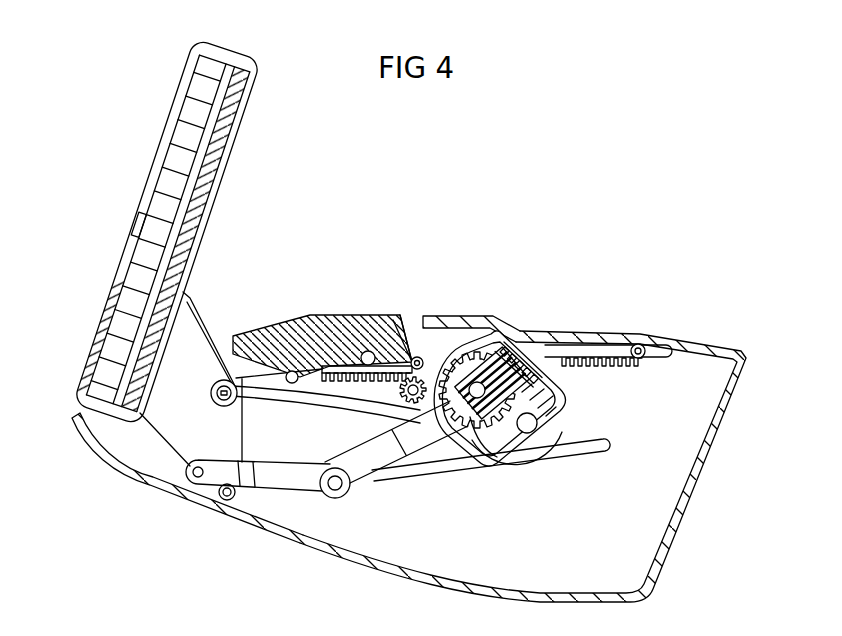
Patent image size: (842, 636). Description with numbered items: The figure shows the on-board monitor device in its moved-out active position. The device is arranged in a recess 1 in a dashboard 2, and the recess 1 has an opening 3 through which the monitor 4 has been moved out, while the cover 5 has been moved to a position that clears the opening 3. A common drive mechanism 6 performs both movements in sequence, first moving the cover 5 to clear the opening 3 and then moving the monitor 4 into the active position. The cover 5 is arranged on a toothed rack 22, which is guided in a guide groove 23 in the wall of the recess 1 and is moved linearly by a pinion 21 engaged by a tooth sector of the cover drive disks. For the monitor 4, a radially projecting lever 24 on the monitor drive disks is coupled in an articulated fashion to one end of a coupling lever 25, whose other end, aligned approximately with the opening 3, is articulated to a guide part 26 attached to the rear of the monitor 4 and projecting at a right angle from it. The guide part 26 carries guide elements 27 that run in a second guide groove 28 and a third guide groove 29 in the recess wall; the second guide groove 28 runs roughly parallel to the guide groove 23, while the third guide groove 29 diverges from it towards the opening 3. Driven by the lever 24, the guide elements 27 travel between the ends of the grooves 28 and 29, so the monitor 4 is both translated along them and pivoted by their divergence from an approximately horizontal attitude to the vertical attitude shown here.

The recess 1 is at (695, 414).
The dashboard 2 is at (490, 315).
The opening 3 is at (103, 432).
The monitor 4 is at (180, 143).
The cover 5 is at (297, 330).
The common drive mechanism 6 is at (650, 508).
The pinion 21 is at (416, 357).
The toothed rack 22 is at (605, 362).
The guide groove 23 is at (263, 372).
The lever 24 is at (388, 458).
The coupling lever 25 is at (283, 487).
The guide part 26 is at (169, 440).
The guide elements 27 is at (229, 383).
The second guide groove 28 is at (454, 466).
The third guide groove 29 is at (311, 397).